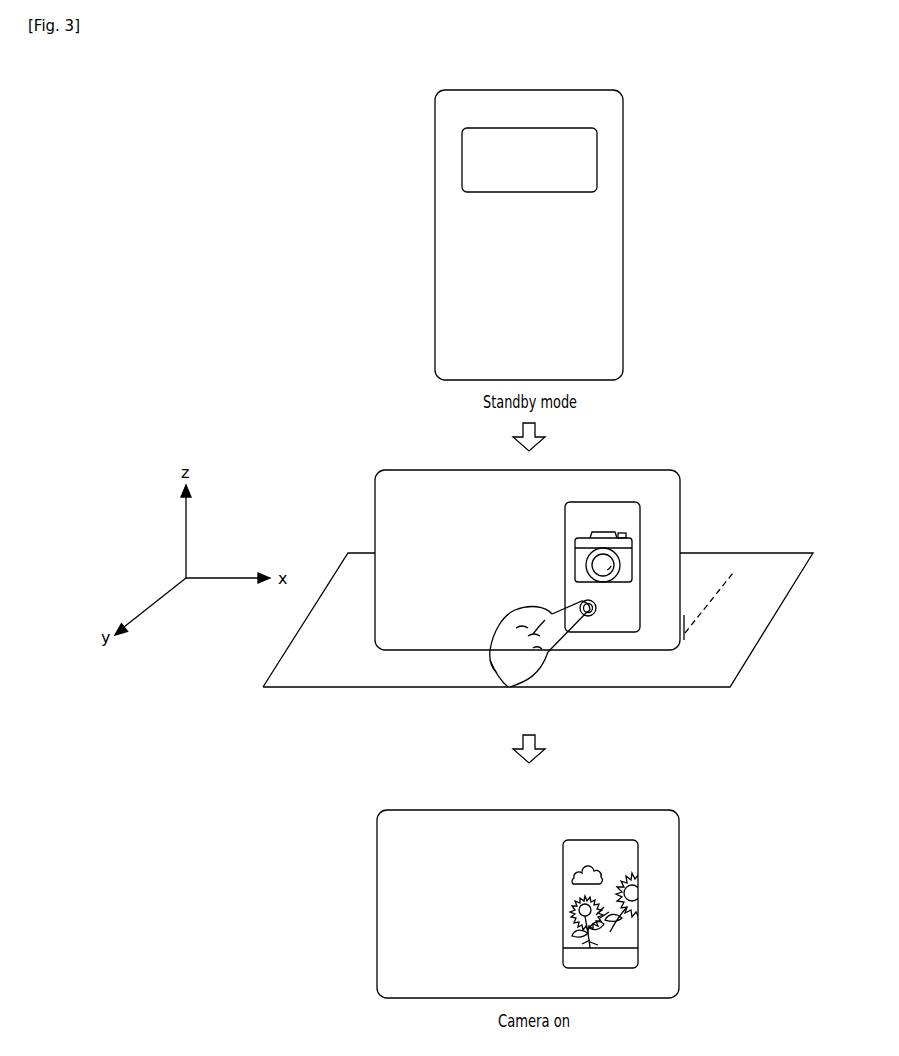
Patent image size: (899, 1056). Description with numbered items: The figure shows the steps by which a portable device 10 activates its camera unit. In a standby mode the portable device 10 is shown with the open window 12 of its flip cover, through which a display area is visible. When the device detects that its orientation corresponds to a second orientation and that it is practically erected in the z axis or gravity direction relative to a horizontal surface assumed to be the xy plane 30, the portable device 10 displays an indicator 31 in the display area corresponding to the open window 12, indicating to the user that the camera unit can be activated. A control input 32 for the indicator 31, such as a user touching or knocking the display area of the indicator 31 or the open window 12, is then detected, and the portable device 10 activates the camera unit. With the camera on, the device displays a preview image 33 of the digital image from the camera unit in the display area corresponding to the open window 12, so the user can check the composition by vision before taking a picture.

The portable device 10 is at (605, 345).
The open window 12 is at (597, 160).
The xy plane 30 is at (737, 640).
The indicator 31 is at (603, 530).
The control input 32 is at (533, 657).
The preview image 33 is at (636, 902).